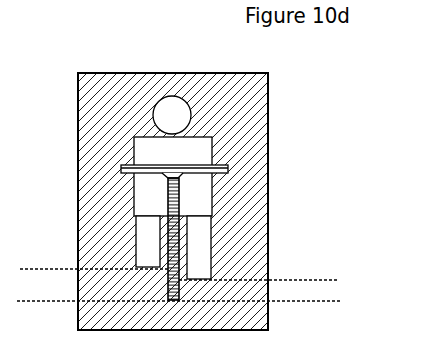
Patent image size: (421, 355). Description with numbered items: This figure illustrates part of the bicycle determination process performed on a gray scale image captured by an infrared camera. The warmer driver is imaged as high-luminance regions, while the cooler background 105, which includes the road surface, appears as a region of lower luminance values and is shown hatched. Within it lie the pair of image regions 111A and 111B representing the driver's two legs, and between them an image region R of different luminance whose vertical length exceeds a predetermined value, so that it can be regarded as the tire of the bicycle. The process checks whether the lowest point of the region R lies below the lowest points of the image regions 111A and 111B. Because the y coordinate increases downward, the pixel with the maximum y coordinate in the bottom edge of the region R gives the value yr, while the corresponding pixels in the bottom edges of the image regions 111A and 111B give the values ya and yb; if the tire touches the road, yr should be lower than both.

The background 105 is at (242, 113).
The image region of a leg 111A is at (200, 248).
The image region of a leg 111B is at (150, 242).
The image region R is at (180, 213).
The y coordinate value of the lowest point of image region 111A ya is at (258, 271).
The y coordinate value of the lowest point of image region 111B yb is at (91, 259).
The y coordinate value of the lowest point of region R yr is at (178, 293).